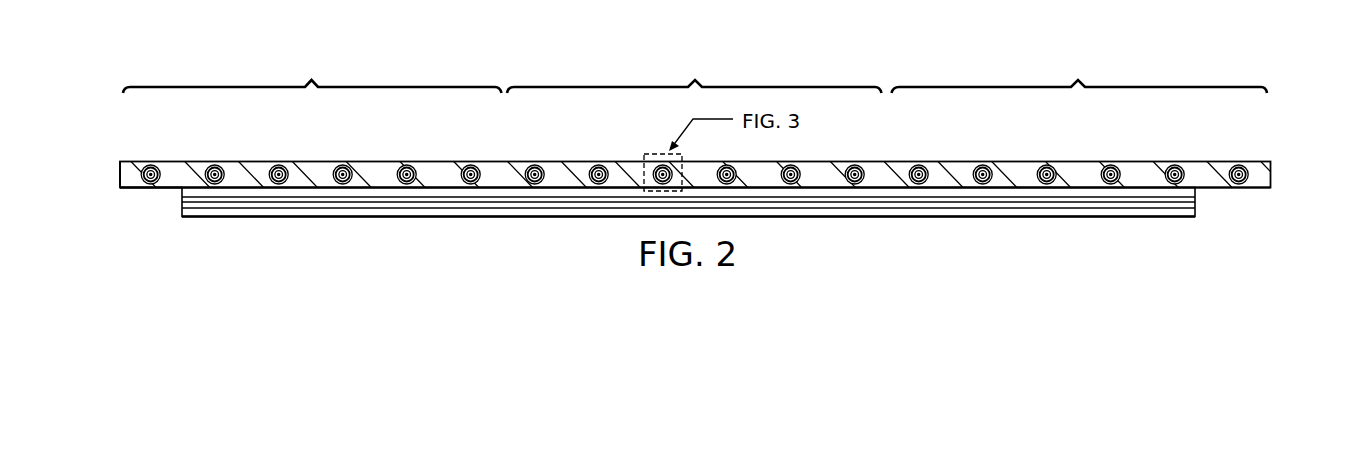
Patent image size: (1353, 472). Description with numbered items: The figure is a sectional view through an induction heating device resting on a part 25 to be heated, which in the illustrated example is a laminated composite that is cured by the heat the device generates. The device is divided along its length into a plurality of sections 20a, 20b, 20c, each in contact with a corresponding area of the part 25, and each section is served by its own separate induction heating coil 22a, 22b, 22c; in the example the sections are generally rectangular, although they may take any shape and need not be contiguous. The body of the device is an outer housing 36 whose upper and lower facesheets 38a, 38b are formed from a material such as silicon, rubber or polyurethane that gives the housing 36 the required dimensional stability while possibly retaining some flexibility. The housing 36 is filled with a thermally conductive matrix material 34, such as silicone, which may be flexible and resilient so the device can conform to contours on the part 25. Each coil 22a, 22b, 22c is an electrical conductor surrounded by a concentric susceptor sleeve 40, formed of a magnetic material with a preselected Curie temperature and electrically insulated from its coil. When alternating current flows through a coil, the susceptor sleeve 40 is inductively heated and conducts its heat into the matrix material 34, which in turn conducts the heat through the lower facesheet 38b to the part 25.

The section 20a is at (312, 74).
The section 20b is at (694, 74).
The section 20c is at (1080, 74).
The induction heating coil 22a is at (208, 167).
The induction heating coil 22b is at (654, 168).
The induction heating coil 22c is at (977, 165).
The part 25 is at (1050, 217).
The matrix material 34 is at (120, 168).
The outer housing 36 is at (120, 181).
The upper facesheet 38a is at (128, 167).
The lower facesheet 38b is at (138, 189).
The susceptor sleeve 40 is at (416, 158).